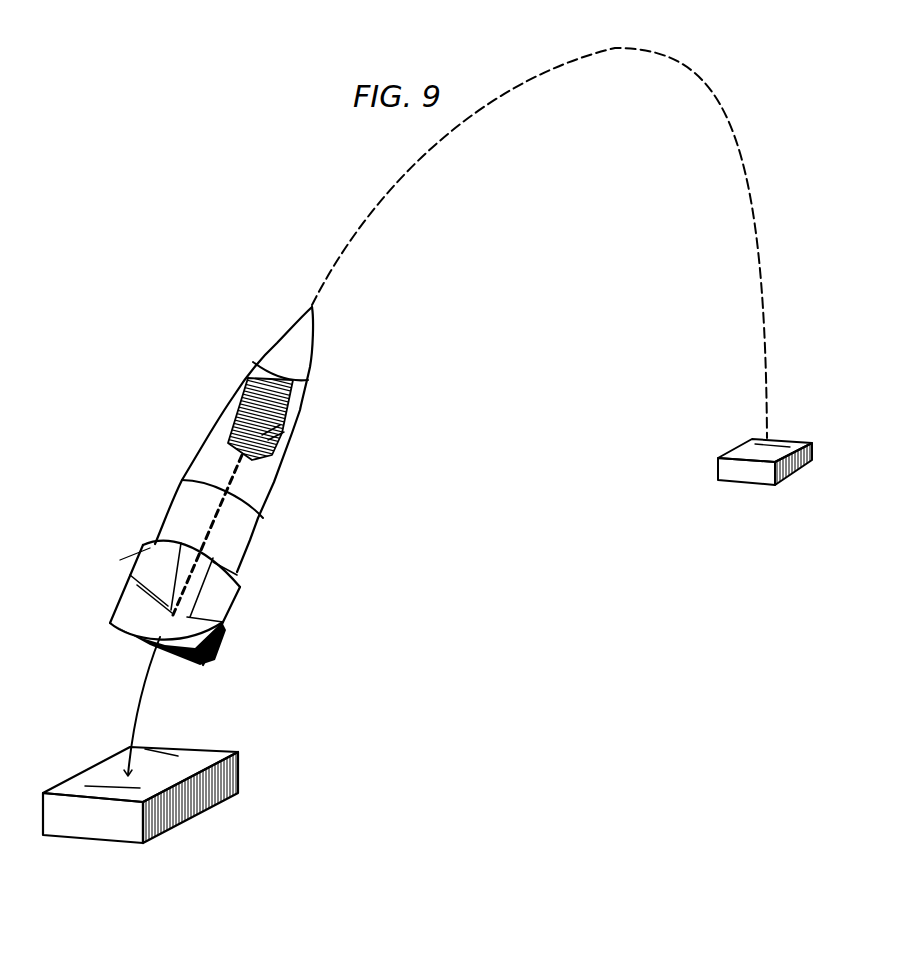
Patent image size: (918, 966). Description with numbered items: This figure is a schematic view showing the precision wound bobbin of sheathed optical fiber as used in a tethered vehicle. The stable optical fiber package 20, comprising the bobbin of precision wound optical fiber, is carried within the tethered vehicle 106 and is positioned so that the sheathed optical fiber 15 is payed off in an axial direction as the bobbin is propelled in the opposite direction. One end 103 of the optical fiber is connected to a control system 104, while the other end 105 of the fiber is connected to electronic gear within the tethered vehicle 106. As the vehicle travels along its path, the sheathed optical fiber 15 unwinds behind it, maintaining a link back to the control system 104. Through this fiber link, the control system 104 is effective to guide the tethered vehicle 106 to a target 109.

The tethered vehicle 106 is at (297, 331).
The end of the optical fiber 105 is at (230, 460).
The optical fiber package 20 is at (270, 432).
The sheathed optical fiber 15 is at (140, 688).
The end of the optical fiber 103 is at (127, 773).
The control system 104 is at (232, 778).
The target 109 is at (726, 468).